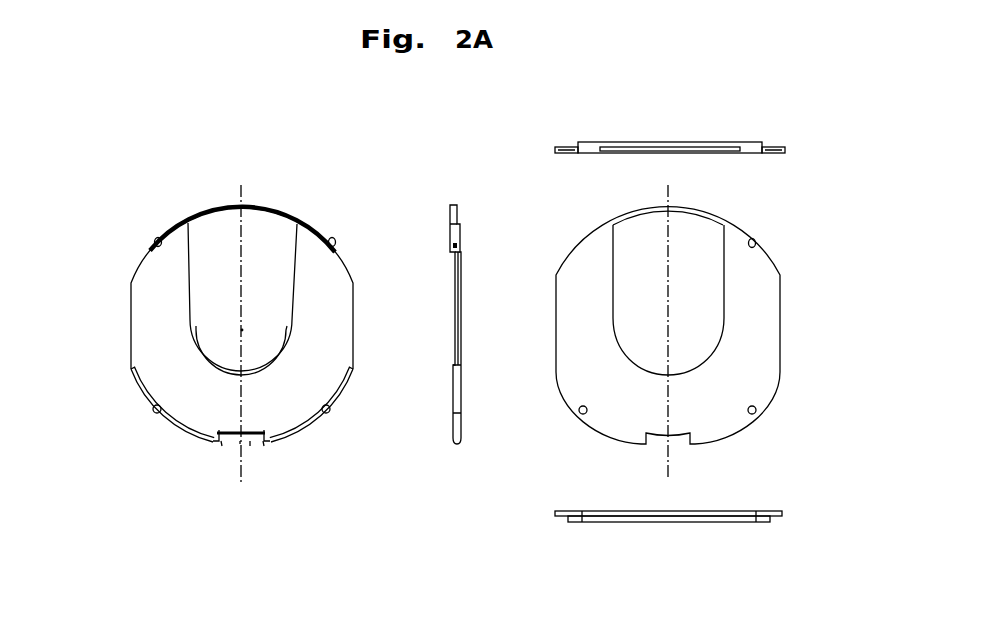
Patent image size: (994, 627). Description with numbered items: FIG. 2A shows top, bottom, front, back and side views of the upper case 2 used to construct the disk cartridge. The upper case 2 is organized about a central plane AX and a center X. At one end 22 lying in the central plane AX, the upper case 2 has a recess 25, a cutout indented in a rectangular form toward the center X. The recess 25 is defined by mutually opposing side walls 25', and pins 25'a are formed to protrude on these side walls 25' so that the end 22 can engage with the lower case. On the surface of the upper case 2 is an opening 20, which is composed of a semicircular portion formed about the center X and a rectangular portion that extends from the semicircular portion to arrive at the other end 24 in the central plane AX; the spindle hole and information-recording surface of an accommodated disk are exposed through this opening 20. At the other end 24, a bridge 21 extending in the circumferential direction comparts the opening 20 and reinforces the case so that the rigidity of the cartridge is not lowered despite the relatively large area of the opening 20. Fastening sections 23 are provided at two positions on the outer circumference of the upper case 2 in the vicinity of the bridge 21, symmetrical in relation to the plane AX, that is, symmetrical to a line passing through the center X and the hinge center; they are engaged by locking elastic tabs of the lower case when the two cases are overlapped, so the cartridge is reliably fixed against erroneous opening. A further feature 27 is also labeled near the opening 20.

The upper case 2 is at (134, 162).
The opening 20 is at (222, 247).
The bridge 21 is at (276, 207).
The one end 22 is at (268, 505).
The fastening section 23 is at (156, 241).
The other end 24 is at (262, 200).
The recess 25 is at (230, 481).
The side wall 25' is at (276, 475).
The pin 25'a is at (257, 470).
The lip 27 is at (288, 352).
The center X is at (243, 330).
The central plane AX is at (456, 349).